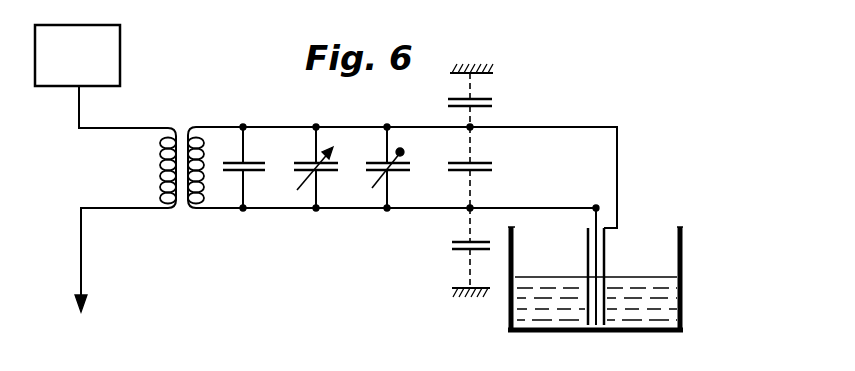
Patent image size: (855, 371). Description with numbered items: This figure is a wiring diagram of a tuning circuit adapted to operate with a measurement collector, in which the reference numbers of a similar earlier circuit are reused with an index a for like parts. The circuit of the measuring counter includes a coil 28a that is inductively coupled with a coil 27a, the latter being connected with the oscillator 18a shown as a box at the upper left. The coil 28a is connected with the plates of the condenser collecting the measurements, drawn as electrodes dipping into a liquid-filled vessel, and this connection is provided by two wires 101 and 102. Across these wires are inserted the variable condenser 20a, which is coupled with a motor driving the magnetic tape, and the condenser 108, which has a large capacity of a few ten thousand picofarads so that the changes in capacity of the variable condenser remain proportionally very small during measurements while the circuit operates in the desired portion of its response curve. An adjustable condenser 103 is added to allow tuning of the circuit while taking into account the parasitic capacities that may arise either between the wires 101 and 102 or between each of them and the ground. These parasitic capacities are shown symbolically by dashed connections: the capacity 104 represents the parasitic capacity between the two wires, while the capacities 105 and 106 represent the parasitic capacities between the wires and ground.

The oscillator 18a is at (112, 73).
The coil 27a is at (160, 170).
The coil 28a is at (200, 195).
The condenser having a large capacity 108 is at (250, 162).
The variable condenser 20a is at (327, 175).
The adjustable condenser 103 is at (378, 162).
The parasitic capacity 106 is at (482, 110).
The parasitic capacity 104 is at (478, 172).
The parasitic capacity 105 is at (467, 252).
The wire 101 is at (582, 122).
The wire 102 is at (558, 205).